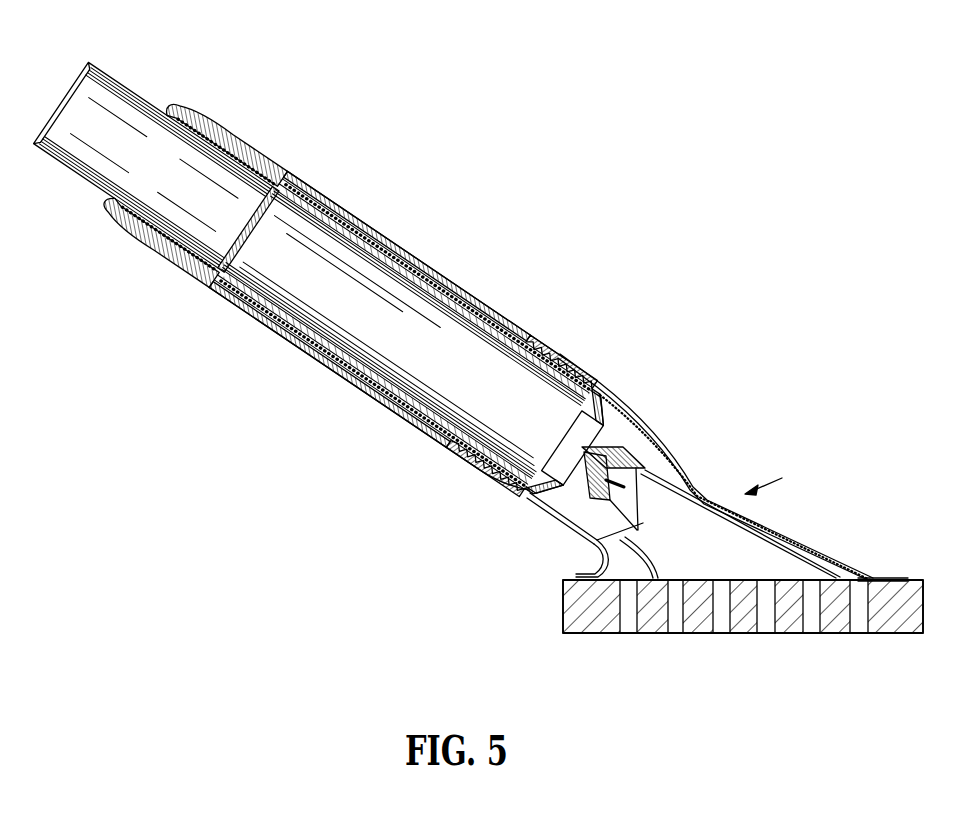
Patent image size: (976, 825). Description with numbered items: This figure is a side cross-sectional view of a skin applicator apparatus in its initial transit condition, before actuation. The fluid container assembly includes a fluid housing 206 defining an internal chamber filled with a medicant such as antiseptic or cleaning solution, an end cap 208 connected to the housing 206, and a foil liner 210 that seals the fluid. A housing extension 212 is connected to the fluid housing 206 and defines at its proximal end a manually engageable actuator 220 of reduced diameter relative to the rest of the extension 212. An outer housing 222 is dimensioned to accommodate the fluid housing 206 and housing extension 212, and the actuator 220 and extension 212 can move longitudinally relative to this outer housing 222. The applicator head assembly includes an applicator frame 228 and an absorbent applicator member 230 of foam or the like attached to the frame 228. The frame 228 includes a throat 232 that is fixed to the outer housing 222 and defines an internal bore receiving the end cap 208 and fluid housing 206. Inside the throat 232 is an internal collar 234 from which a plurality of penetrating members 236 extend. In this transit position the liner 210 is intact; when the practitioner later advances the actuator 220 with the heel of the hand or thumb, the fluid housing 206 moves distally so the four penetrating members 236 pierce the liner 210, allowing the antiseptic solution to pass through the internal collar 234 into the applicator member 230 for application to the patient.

The fluid housing 206 is at (405, 340).
The end cap 208 is at (482, 470).
The foil liner 210 is at (563, 447).
The housing extension 212 is at (205, 185).
The manually engageable actuator 220 is at (92, 62).
The outer housing 222 is at (285, 173).
The applicator frame 228 is at (778, 474).
The absorbent applicator member 230 is at (573, 612).
The throat 232 is at (635, 403).
The internal collar 234 is at (597, 540).
The penetrating members 236 is at (610, 447).